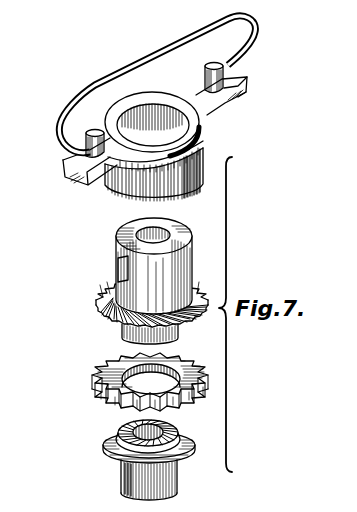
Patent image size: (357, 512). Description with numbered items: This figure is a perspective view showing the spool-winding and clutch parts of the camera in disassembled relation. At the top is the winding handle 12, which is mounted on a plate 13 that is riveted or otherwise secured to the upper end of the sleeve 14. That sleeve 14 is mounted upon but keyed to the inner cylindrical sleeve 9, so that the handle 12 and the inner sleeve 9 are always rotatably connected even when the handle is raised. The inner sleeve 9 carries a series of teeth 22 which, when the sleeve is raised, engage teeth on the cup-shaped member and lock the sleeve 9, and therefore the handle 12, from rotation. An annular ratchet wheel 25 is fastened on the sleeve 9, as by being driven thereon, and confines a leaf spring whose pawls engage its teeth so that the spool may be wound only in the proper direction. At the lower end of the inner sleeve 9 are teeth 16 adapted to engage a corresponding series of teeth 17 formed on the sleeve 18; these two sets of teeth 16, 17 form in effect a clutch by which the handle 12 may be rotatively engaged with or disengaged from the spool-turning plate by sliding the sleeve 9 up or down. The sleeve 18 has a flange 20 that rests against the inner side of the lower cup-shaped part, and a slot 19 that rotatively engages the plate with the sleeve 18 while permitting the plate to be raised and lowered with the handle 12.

The winding handle 12 is at (150, 56).
The plate 13 is at (220, 110).
The sleeve 14 is at (112, 185).
The inner cylindrical sleeve 9 is at (116, 250).
The teeth 22 is at (100, 288).
The teeth 16 is at (123, 330).
The annular ratchet wheel 25 is at (98, 377).
The teeth 17 is at (118, 433).
The flange 20 is at (104, 446).
The sleeve 18 is at (121, 478).
The slot 19 is at (125, 494).